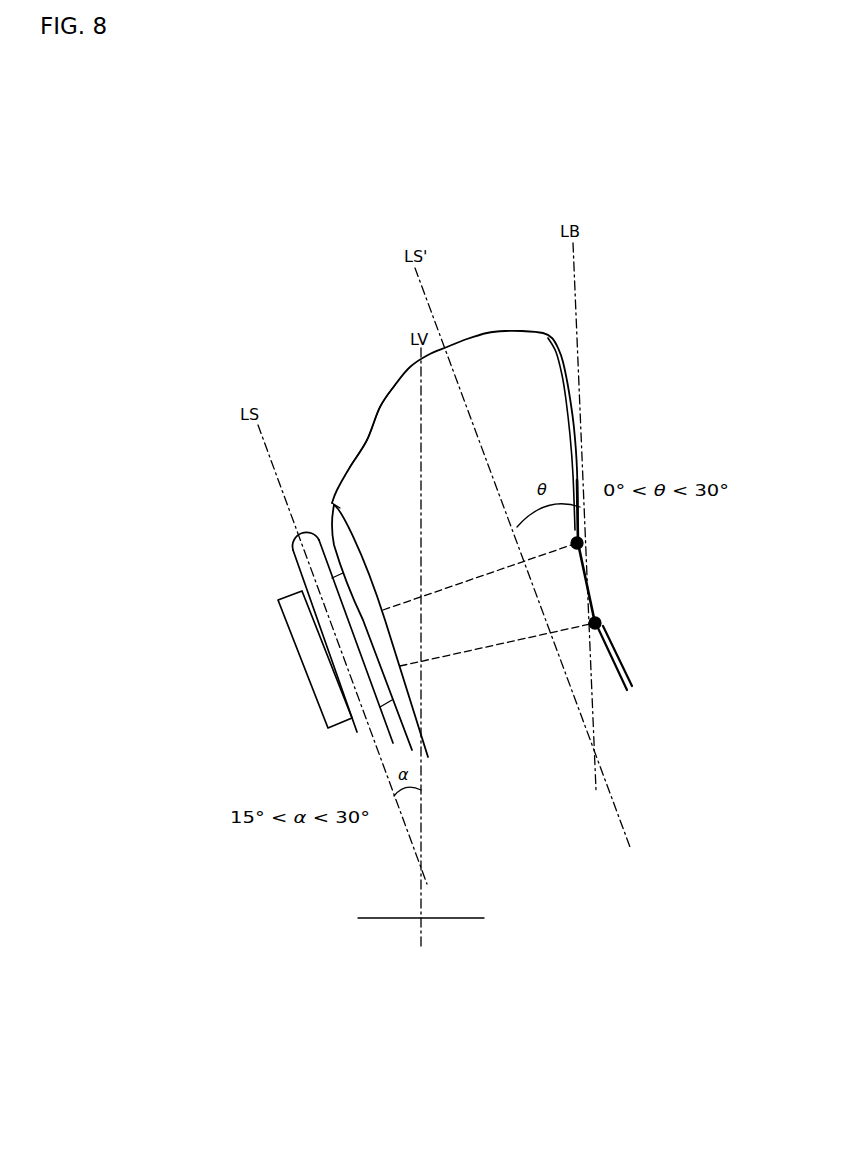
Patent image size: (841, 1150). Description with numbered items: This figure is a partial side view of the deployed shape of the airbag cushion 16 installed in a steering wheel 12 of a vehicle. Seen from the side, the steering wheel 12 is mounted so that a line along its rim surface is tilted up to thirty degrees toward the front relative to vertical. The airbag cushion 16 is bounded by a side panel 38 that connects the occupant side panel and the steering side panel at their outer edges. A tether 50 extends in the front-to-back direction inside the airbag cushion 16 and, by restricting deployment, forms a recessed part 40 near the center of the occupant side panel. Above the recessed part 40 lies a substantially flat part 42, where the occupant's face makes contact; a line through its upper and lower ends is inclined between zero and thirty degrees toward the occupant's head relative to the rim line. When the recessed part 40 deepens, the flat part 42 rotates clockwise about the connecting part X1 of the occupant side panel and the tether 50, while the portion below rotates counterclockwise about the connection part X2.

The steering wheel 12 is at (297, 560).
The airbag cushion 16 is at (513, 331).
The side panel 38 is at (383, 413).
The recessed part 40 is at (592, 583).
The flat part 42 is at (580, 420).
The tether 50 is at (484, 646).
The connecting part X1 is at (583, 542).
The connection part X2 is at (600, 623).